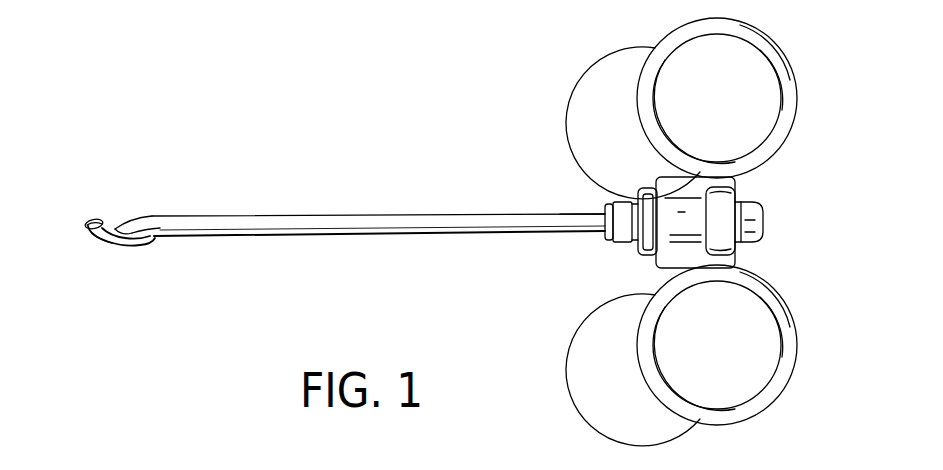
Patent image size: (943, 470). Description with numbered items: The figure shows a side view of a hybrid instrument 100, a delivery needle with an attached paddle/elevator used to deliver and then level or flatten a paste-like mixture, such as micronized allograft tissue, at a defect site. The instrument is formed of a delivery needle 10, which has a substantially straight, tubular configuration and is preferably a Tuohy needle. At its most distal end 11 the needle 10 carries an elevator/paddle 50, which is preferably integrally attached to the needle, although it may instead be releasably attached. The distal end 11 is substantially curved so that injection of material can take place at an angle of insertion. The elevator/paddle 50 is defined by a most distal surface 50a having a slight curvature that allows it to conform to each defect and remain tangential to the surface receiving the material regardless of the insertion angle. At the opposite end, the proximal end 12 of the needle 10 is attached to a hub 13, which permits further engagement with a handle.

The hybrid instrument 100 is at (380, 116).
The delivery needle 10 is at (413, 222).
The distal end 11 is at (143, 218).
The proximal end 12 is at (575, 220).
The hub 13 is at (621, 227).
The elevator/paddle 50 is at (110, 232).
The most distal surface 50a is at (100, 239).